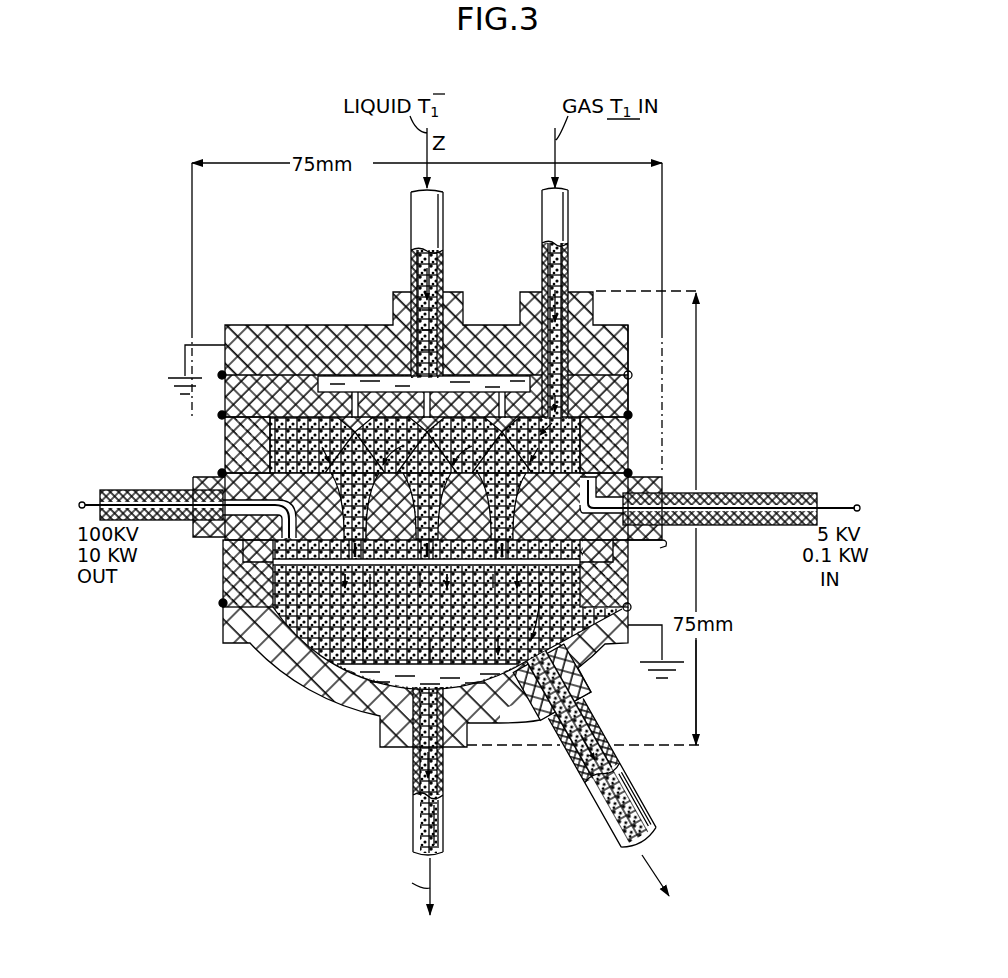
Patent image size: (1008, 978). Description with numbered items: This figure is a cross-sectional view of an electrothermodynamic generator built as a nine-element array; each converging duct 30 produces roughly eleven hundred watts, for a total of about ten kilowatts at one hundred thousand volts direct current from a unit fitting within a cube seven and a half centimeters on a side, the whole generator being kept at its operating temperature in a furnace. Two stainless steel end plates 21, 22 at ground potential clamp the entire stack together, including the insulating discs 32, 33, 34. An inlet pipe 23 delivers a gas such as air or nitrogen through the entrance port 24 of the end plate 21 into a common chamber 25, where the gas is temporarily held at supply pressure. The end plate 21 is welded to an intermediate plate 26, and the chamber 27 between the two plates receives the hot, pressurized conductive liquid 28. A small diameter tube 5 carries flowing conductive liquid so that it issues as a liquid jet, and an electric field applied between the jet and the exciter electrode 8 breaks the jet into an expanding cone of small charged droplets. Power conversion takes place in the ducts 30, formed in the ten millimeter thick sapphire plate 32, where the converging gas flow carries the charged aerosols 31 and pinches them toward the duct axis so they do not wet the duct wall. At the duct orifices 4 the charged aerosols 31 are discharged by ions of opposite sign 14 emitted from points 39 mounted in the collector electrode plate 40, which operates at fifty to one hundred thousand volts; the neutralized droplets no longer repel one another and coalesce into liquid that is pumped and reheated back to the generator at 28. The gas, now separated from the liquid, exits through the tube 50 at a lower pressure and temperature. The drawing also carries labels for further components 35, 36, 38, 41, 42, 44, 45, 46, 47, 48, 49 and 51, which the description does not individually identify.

The orifices 4 is at (368, 543).
The small diameter tube 5 is at (352, 432).
The exciter electrode 8 is at (303, 472).
The ions of opposite sign 14 is at (333, 566).
The end plate 21 is at (224, 325).
The end plate 22 is at (328, 697).
The inlet pipe 23 is at (571, 229).
The entrance port 24 is at (561, 345).
The common chamber 25 is at (575, 450).
The intermediate plate 26 is at (630, 396).
The chamber 27 is at (481, 328).
The conductive liquid 28 is at (341, 375).
The converging duct 30 is at (322, 566).
The charged aerosols 31 is at (360, 500).
The sapphire plate 32 is at (206, 484).
The insulating disc 33 is at (224, 444).
The insulating disc 34 is at (224, 567).
The bolt 35 is at (631, 372).
The bolt 36 is at (630, 605).
The insulating flange 38 is at (632, 473).
The points 39 is at (366, 574).
The collector electrode plate 40 is at (464, 570).
The high voltage output wire 41 is at (85, 502).
The insulated output lead 42 is at (130, 489).
The input wire 44 is at (834, 506).
The insulated input lead 45 is at (746, 494).
The flange step 46 is at (660, 527).
The outlet boss 47 is at (538, 696).
The liquid outlet tube 48 is at (412, 823).
The axis Z-Z' 49 is at (432, 863).
The tube 50 is at (619, 779).
The gas outflow 51 is at (653, 866).